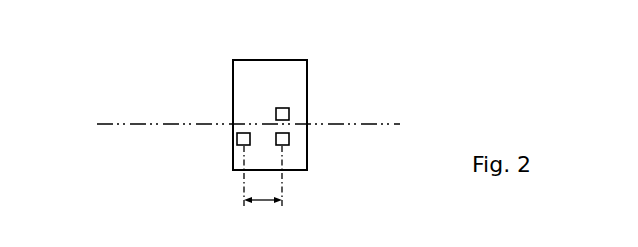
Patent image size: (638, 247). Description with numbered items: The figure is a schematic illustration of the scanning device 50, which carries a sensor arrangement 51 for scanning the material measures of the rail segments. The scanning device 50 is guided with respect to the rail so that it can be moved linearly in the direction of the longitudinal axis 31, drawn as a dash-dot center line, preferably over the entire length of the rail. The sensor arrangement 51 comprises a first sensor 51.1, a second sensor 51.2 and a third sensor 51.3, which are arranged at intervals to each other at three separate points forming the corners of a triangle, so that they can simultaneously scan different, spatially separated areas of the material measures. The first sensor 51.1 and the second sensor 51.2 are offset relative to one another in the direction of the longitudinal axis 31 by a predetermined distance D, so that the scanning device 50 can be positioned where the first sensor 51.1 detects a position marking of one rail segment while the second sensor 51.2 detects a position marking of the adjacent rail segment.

The longitudinal axis 31 is at (97, 122).
The scanning device 50 is at (263, 60).
The sensor arrangement 51 is at (249, 116).
The first sensor 51.1 is at (289, 139).
The second sensor 51.2 is at (237, 139).
The third sensor 51.3 is at (290, 108).
The predetermined distance D is at (263, 188).